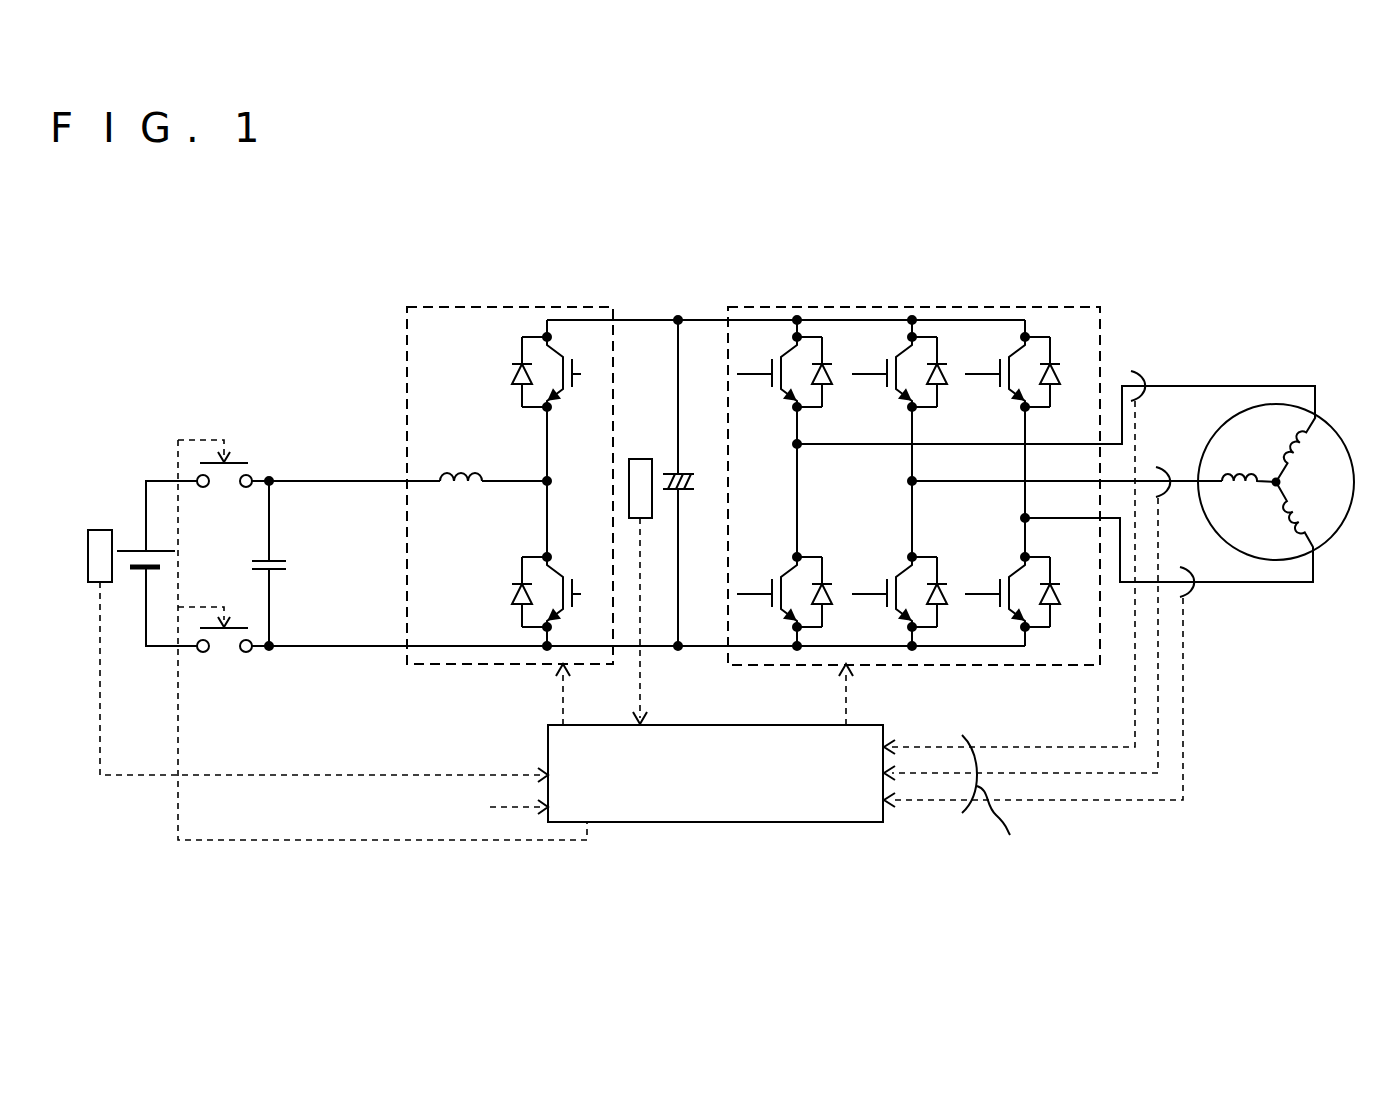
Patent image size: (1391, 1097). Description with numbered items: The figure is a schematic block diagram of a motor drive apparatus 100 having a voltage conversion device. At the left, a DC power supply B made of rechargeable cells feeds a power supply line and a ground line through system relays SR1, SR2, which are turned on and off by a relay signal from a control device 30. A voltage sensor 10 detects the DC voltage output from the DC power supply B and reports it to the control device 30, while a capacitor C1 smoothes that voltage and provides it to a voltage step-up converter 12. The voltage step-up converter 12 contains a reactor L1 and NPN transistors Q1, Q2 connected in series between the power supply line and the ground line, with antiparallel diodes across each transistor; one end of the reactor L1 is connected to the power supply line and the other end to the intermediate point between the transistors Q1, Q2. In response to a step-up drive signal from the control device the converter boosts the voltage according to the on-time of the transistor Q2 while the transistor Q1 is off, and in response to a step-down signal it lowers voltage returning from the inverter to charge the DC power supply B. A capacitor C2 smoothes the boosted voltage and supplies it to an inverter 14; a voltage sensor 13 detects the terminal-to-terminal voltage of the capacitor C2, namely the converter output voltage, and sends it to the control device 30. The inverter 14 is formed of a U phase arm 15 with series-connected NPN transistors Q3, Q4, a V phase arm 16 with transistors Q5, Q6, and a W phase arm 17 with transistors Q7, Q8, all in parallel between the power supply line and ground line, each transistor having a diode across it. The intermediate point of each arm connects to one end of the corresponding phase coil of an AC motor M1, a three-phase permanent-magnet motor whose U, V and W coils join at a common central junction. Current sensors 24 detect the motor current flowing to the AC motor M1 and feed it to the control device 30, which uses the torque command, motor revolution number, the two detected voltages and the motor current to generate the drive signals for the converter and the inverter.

The motor drive apparatus 100 is at (1112, 258).
The voltage sensor 10 is at (100, 530).
The voltage step-up converter 12 is at (497, 307).
The voltage sensor 13 is at (640, 459).
The inverter 14 is at (948, 307).
The U phase arm 15 is at (786, 454).
The V phase arm 16 is at (896, 491).
The W phase arm 17 is at (1014, 527).
The electric-current sensors 24 is at (1138, 372).
The control device 30 is at (728, 822).
The DC power supply B is at (130, 546).
The capacitor C1 is at (263, 556).
The capacitor C2 is at (686, 472).
The reactor L1 is at (461, 462).
The system relay SR1 is at (247, 462).
The system relay SR2 is at (224, 652).
The AC motor M1 is at (1337, 434).
The NPN transistor Q1 is at (559, 372).
The NPN transistor Q2 is at (556, 592).
The NPN transistor Q3 is at (784, 372).
The NPN transistor Q4 is at (784, 592).
The NPN transistor Q5 is at (899, 372).
The NPN transistor Q6 is at (899, 592).
The NPN transistor Q7 is at (1012, 372).
The NPN transistor Q8 is at (1012, 592).